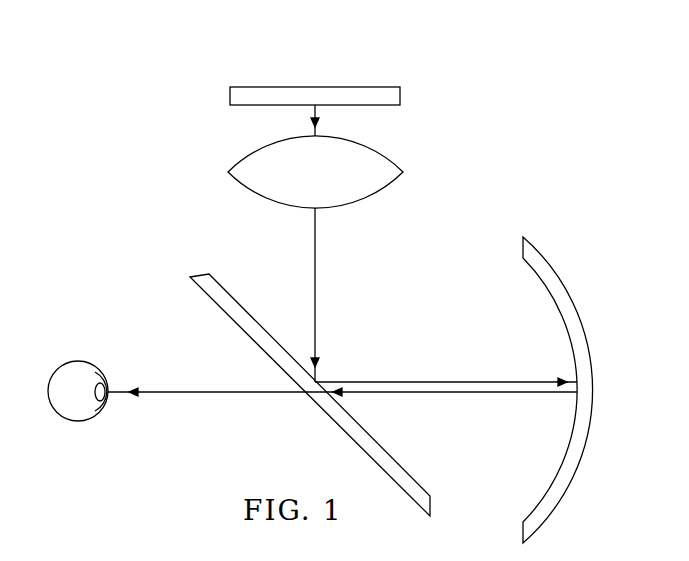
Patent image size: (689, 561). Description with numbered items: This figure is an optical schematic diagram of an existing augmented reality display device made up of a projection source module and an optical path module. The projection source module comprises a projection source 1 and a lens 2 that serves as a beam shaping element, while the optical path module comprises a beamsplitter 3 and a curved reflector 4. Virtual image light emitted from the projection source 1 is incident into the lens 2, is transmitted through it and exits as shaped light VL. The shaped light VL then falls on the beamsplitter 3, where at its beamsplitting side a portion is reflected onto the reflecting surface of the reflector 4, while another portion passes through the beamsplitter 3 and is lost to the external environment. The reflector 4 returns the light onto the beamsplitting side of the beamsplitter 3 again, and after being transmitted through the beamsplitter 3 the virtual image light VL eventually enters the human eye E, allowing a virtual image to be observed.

The projection source 1 is at (377, 97).
The lens 2 is at (387, 157).
The beamsplitter 3 is at (202, 275).
The curved reflector 4 is at (550, 270).
The human eye E is at (93, 368).
The virtual image light VL is at (326, 243).